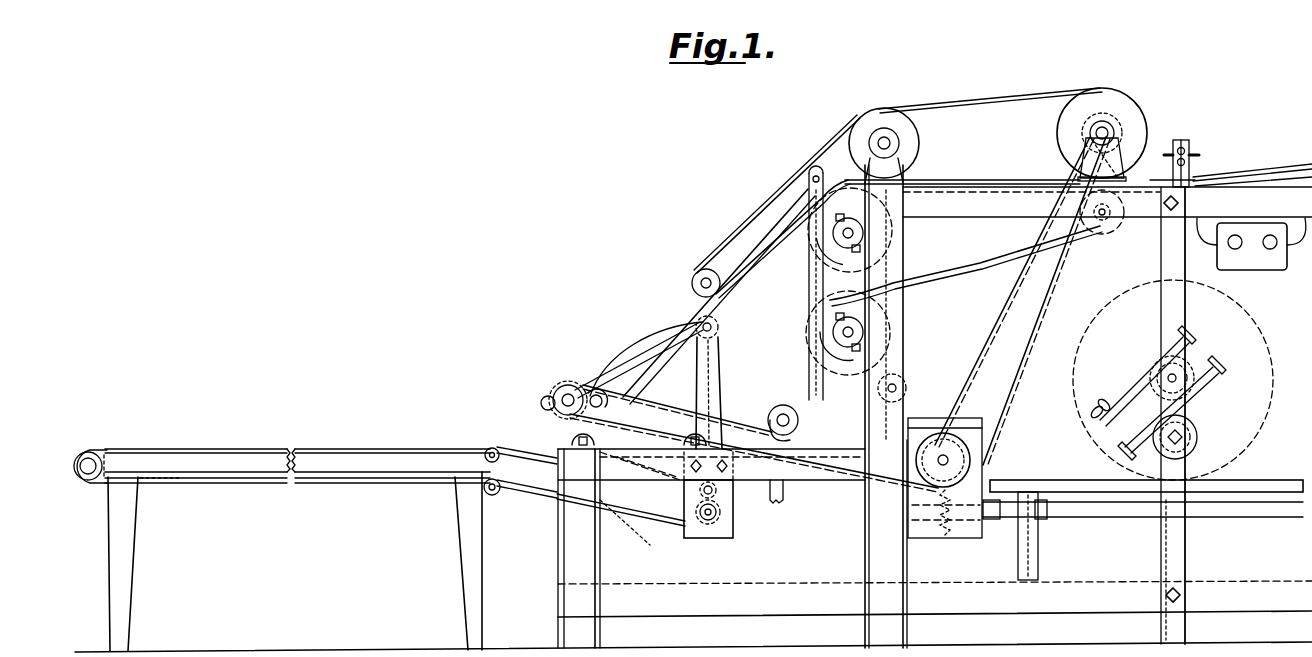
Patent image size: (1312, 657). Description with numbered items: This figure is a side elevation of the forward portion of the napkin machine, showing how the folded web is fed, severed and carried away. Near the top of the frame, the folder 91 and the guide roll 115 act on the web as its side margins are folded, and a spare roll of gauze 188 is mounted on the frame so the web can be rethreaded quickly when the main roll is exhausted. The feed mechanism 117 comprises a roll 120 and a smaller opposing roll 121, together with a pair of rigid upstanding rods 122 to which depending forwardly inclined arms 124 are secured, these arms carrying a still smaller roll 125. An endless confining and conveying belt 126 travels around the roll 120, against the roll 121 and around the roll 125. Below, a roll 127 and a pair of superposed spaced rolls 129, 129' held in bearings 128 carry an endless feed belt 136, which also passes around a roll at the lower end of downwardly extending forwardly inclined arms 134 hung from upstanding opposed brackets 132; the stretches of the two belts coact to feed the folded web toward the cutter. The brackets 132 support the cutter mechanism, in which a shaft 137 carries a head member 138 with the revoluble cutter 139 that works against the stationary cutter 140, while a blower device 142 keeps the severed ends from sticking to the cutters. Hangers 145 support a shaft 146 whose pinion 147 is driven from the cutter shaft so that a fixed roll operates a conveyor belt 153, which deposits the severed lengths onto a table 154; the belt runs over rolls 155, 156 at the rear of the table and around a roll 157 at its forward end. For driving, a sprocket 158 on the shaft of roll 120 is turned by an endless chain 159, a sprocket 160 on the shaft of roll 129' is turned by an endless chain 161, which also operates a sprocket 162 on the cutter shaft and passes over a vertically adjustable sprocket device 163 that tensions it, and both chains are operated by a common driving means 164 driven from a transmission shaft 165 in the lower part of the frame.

The folder 91 is at (1272, 165).
The guide roll 115 is at (1183, 143).
The feed mechanism 117 is at (945, 100).
The roll 120 is at (1102, 106).
The roll 121 is at (877, 122).
The rigid upstanding rods 122 is at (835, 240).
The depending forwardly inclined arms 124 is at (729, 253).
The roll 125 is at (695, 278).
The endless confining and conveying belt 126 is at (819, 153).
The roll 127 is at (1105, 230).
The bearings 128 is at (840, 226).
The roll 129 is at (799, 261).
The roll 129' is at (795, 346).
The upstanding opposed brackets 132 is at (718, 353).
The downwardly extending forwardly inclined arms 134 is at (673, 357).
The endless feed belt 136 is at (957, 265).
The shaft 137 is at (570, 385).
The head member 138 is at (597, 392).
The revoluble cutter 139 is at (576, 423).
The stationary cutter 140 is at (632, 388).
The blower device 142 is at (788, 491).
The hangers 145 is at (733, 530).
The shaft 146 is at (709, 522).
The pinion 147 is at (689, 520).
The conveyor belt 153 is at (416, 447).
The table 154 is at (333, 458).
The roll 155 is at (493, 448).
The roll 156 is at (500, 494).
The roll 157 is at (86, 452).
The sprocket 158 is at (1092, 170).
The endless chain 159 is at (1020, 403).
The sprocket 160 is at (862, 347).
The endless chain 161 is at (904, 376).
The sprocket 162 is at (551, 395).
The vertically adjustable sprocket device 163 is at (779, 405).
The common driving means 164 is at (950, 448).
The transmission shaft 165 is at (1107, 508).
The roll of gauze 188 is at (1247, 318).